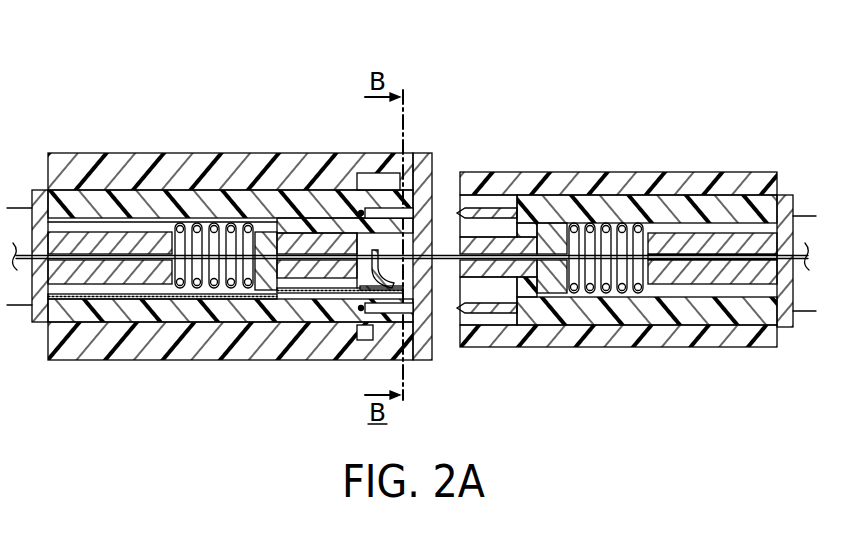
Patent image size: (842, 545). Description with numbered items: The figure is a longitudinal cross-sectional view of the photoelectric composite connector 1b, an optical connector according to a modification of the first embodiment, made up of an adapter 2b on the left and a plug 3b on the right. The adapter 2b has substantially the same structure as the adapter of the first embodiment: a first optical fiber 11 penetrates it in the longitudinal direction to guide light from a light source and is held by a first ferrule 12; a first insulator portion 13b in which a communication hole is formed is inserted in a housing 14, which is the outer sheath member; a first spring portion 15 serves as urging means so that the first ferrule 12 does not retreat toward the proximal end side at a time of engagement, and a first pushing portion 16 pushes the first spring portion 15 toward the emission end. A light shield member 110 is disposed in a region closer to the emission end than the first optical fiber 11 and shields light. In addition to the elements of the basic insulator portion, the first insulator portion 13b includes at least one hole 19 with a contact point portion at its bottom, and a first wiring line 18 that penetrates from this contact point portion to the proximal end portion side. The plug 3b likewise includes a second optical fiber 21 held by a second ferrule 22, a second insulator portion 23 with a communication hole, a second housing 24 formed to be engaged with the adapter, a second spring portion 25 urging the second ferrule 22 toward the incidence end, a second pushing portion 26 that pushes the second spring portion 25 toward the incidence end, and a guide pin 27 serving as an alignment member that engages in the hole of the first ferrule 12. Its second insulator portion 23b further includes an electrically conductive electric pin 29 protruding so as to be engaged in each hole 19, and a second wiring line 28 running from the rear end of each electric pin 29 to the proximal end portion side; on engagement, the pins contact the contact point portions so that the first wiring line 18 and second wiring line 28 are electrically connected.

The photoelectric composite connector 1b is at (448, 80).
The adapter 2b is at (246, 93).
The plug 3b is at (610, 95).
The first optical fiber 11 is at (63, 310).
The first ferrule 12 is at (307, 243).
The first insulator portion 13b is at (267, 200).
The housing 14 is at (220, 180).
The first spring portion 15 is at (210, 233).
The first pushing portion 16 is at (120, 237).
The first wiring line 18 is at (63, 215).
The hole 19 is at (380, 207).
The second optical fiber 21 is at (733, 262).
The second ferrule 22 is at (530, 233).
The second insulator portion 23 is at (568, 205).
The second insulator portion 23b is at (583, 327).
The second housing 24 is at (680, 187).
The second spring portion 25 is at (637, 218).
The second pushing portion 26 is at (720, 237).
The guide pin 27 is at (470, 190).
The second wiring line 28 is at (753, 217).
The electric pin 29 is at (497, 210).
The light shield member 110 is at (399, 260).